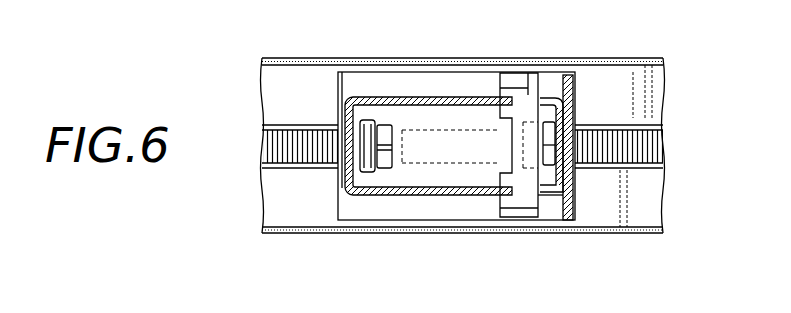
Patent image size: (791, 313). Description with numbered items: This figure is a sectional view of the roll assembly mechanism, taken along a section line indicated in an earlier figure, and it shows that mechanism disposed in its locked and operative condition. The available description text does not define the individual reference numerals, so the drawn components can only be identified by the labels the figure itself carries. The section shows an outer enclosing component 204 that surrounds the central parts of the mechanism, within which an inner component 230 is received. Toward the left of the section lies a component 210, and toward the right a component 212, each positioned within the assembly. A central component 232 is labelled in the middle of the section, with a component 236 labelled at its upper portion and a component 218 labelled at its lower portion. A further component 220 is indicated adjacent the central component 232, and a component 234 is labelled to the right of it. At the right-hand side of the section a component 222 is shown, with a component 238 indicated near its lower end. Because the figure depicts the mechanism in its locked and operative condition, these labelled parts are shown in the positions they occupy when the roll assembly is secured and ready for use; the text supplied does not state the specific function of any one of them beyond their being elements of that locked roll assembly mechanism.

The housing 204 is at (402, 212).
The nut 210 is at (380, 130).
The nut 212 is at (555, 167).
The lower flange 218 is at (530, 192).
The bolt 220 is at (540, 110).
The plate 222 is at (568, 215).
The tube 230 is at (500, 92).
The clamp body 232 is at (498, 195).
The bracket 234 is at (560, 108).
The upper flange 236 is at (527, 76).
The flange 238 is at (538, 200).